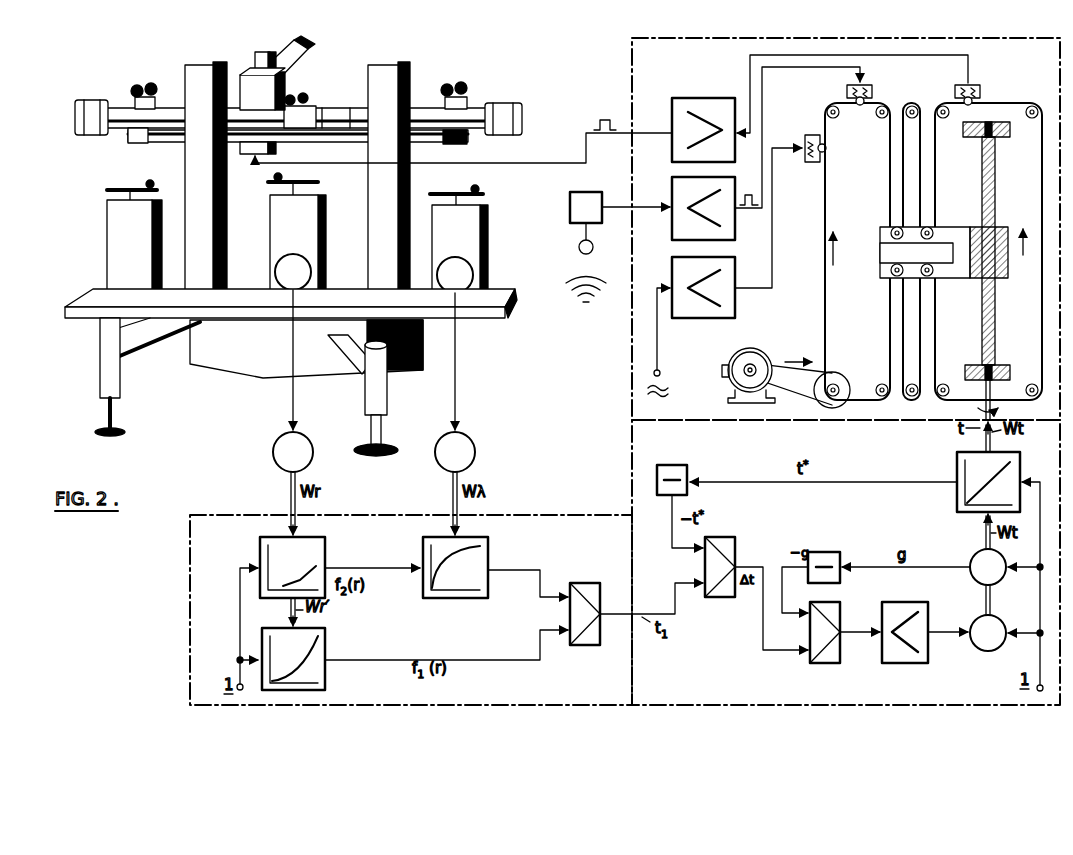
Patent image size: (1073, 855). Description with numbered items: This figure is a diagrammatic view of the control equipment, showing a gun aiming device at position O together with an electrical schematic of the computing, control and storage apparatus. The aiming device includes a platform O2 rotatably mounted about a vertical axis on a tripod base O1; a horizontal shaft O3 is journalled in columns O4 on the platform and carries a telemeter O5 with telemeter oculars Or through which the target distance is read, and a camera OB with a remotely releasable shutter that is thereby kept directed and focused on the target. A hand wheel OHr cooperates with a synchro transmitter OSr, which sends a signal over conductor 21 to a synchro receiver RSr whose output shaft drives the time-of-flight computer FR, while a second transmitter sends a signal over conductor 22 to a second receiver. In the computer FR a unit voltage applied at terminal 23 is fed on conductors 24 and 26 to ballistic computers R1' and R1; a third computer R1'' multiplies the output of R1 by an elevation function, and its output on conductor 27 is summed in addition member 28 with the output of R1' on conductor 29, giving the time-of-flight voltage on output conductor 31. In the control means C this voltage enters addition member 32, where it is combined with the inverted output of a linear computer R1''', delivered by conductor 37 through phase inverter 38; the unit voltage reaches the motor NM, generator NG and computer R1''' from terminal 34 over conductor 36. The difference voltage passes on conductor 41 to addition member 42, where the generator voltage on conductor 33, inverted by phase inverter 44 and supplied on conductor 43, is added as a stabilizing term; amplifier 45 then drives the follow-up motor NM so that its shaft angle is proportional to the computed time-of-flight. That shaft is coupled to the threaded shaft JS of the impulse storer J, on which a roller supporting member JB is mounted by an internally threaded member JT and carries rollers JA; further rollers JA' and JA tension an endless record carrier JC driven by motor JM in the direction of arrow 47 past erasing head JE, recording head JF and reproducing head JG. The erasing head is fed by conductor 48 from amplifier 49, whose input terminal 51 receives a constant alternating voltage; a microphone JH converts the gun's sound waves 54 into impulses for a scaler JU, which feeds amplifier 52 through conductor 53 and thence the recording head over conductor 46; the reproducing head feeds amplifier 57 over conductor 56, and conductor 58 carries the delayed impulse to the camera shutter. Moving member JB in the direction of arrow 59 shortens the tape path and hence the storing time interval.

The gun aiming device position O is at (363, 234).
The tripod base O1 is at (214, 352).
The platform O2 is at (85, 318).
The horizontal shaft O3 is at (170, 142).
The columns O4 is at (190, 80).
The telemeter O5 is at (338, 116).
The camera OB is at (245, 75).
The telemeter oculars Or is at (307, 96).
The range adjustment wheel OHr is at (318, 180).
The synchro transmitter OSr is at (300, 272).
The synchro receiver RSr is at (274, 454).
The conductor 21 is at (292, 398).
The conductor 22 is at (456, 379).
The input terminal 23 is at (242, 690).
The conductor 24 is at (240, 655).
The conductor 26 is at (238, 598).
The conductor 27 is at (504, 575).
The addition member 28 is at (583, 646).
The conductor 29 is at (508, 658).
The output conductor 31 is at (615, 614).
The second addition member 32 is at (716, 598).
The output conductor 33 is at (940, 552).
The terminal 34 is at (1042, 691).
The conductor 36 is at (1025, 583).
The conductor 37 is at (855, 478).
The phase inverter 38 is at (675, 465).
The conductor 41 is at (762, 637).
The addition member 42 is at (823, 664).
The conductor 43 is at (780, 575).
The phase inverter 44 is at (822, 552).
The amplifier 45 is at (900, 664).
The conductor 46 is at (762, 92).
The arrow 47 is at (826, 242).
The conductor 48 is at (773, 273).
The amplifier 49 is at (693, 318).
The input terminal 51 is at (662, 372).
The amplifier 52 is at (736, 230).
The conductor 53 is at (649, 206).
The sound waves 54 is at (570, 272).
The conductor 56 is at (954, 58).
The amplifier 57 is at (712, 84).
The conductor 58 is at (586, 146).
The arrow 59 is at (1022, 262).
The first ballistic computer R1 is at (309, 566).
The second ballistic computer R1' is at (312, 658).
The third computer R1'' is at (513, 567).
The linear computer R1''' is at (971, 467).
The time-of-flight computer FR is at (226, 542).
The control means C is at (657, 444).
The impulse storer J is at (1051, 64).
The rollers JA is at (932, 251).
The rollers JA' is at (887, 251).
The roller supporting member JB is at (882, 230).
The endless record carrier JC is at (826, 180).
The erasing head JE is at (808, 136).
The recording head JF is at (870, 88).
The reproducing head JG is at (980, 90).
The microphone JH is at (565, 240).
The motor JM is at (758, 352).
The threaded shaft JS is at (995, 160).
The internally threaded member JT is at (976, 272).
The scaler JU is at (586, 216).
The generator NG is at (988, 564).
The follow-up motor NM is at (1038, 658).